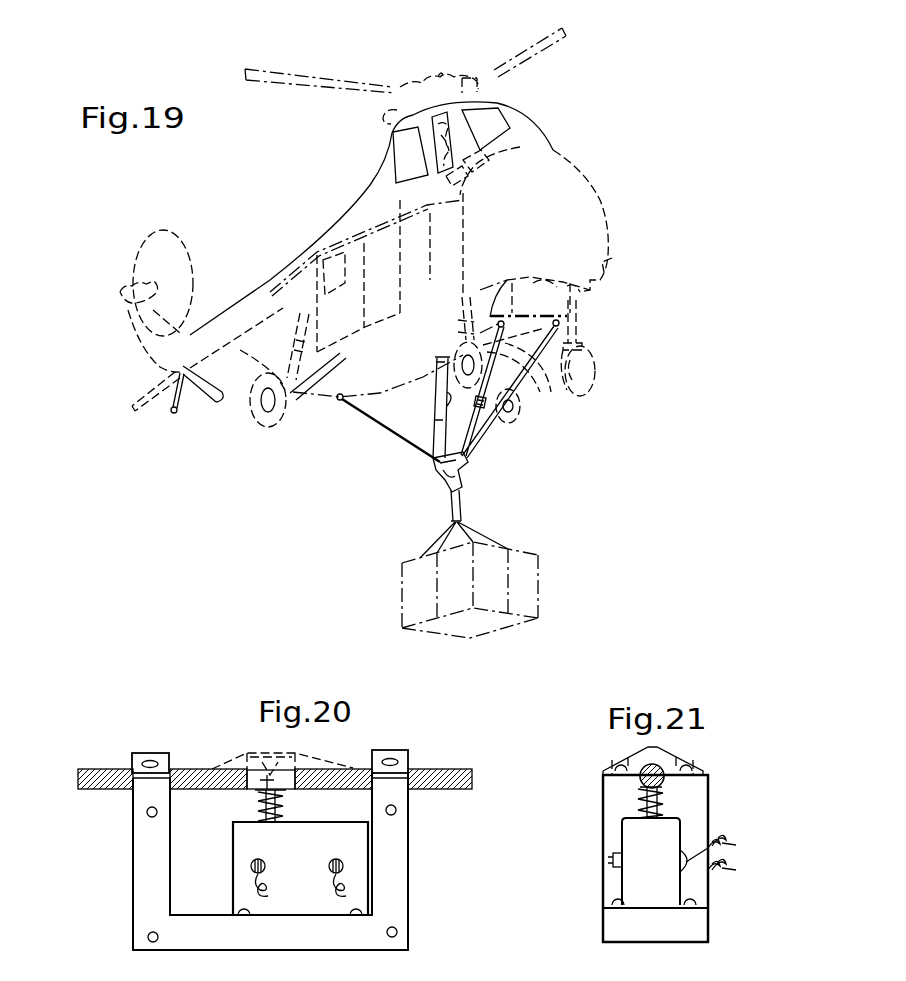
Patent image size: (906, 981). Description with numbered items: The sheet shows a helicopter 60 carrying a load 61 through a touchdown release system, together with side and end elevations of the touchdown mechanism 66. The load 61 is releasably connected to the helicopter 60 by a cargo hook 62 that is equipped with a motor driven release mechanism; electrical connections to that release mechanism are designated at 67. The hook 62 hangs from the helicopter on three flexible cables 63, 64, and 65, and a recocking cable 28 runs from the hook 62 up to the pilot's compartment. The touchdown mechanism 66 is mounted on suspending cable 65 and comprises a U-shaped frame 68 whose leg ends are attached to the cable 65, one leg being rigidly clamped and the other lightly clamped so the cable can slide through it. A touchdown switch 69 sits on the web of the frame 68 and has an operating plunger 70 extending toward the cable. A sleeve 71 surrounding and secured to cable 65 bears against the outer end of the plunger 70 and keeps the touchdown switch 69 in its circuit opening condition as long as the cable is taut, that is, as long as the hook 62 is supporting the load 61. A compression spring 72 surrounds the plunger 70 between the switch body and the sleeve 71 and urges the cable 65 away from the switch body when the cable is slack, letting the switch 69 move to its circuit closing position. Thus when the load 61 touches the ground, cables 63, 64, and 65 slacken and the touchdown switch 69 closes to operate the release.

In FIG. 19, the helicopter 60 is at (596, 176).
In FIG. 19, the load 61 is at (540, 607).
In FIG. 19, the cargo hook 62 is at (463, 467).
In FIG. 19, the flexible cable 63 is at (382, 428).
In FIG. 19, the flexible cable 64 is at (547, 386).
In FIG. 19, the flexible cable 65 is at (532, 400).
In FIG. 20, the flexible cable 65 is at (453, 768).
In FIG. 19, the touchdown mechanism 66 is at (491, 426).
In FIG. 20, the touchdown mechanism 66 is at (413, 872).
In FIG. 21, the touchdown mechanism 66 is at (632, 844).
In FIG. 19, the electrical connections 67 is at (434, 403).
In FIG. 19, the recocking cable 28 is at (433, 461).
In FIG. 20, the U-shaped frame 68 is at (403, 948).
In FIG. 20, the touchdown switch 69 is at (233, 879).
In FIG. 21, the touchdown switch 69 is at (672, 861).
In FIG. 20, the operating plunger 70 is at (260, 810).
In FIG. 20, the sleeve 71 is at (278, 763).
In FIG. 20, the compression spring 72 is at (285, 804).